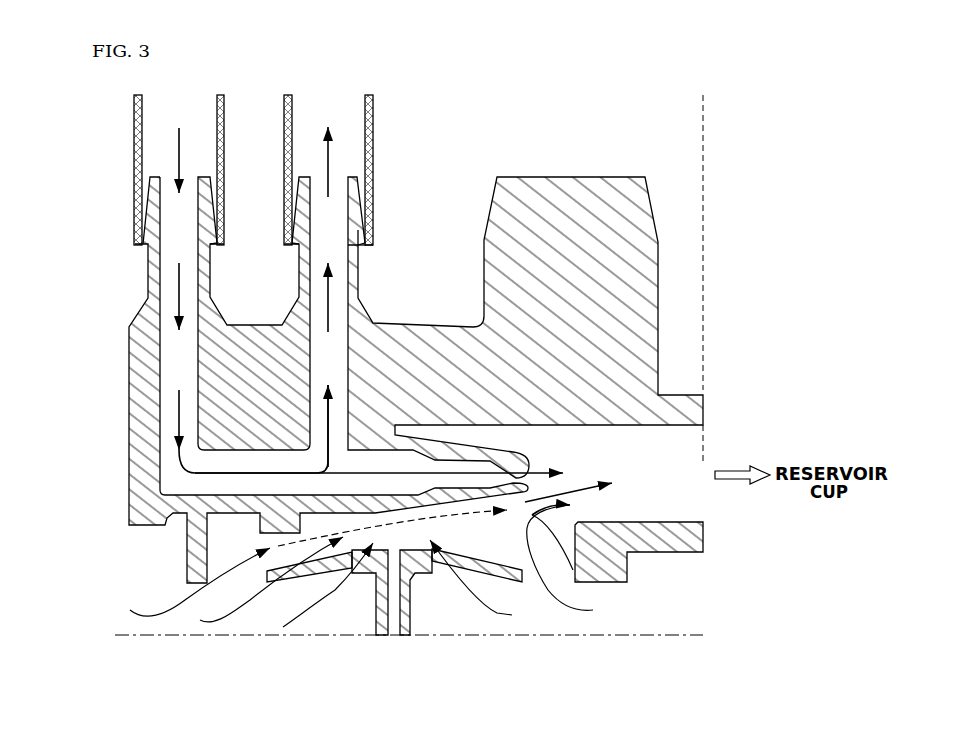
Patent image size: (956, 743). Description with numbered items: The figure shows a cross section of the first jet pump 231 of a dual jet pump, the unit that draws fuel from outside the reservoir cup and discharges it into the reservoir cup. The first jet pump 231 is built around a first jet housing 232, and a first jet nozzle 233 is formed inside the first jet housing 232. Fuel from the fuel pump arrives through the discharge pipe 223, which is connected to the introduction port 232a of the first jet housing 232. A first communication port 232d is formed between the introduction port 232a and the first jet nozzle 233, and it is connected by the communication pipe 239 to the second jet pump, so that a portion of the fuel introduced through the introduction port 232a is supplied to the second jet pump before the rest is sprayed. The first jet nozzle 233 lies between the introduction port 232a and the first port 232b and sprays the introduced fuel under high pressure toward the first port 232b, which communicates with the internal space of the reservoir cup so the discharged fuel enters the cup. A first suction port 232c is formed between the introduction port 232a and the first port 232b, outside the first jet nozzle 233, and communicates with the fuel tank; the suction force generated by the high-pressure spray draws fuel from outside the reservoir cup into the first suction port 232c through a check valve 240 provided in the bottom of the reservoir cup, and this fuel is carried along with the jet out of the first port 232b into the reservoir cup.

The discharge pipe 223 is at (135, 115).
The communication pipe 239 is at (372, 130).
The first jet pump 231 is at (128, 462).
The first jet housing 232 is at (147, 512).
The introduction port 232a is at (150, 201).
The first port 232b is at (662, 425).
The first suction port 232c is at (490, 542).
The first communication port 232d is at (362, 200).
The first jet nozzle 233 is at (466, 450).
The check valve 240 is at (380, 608).